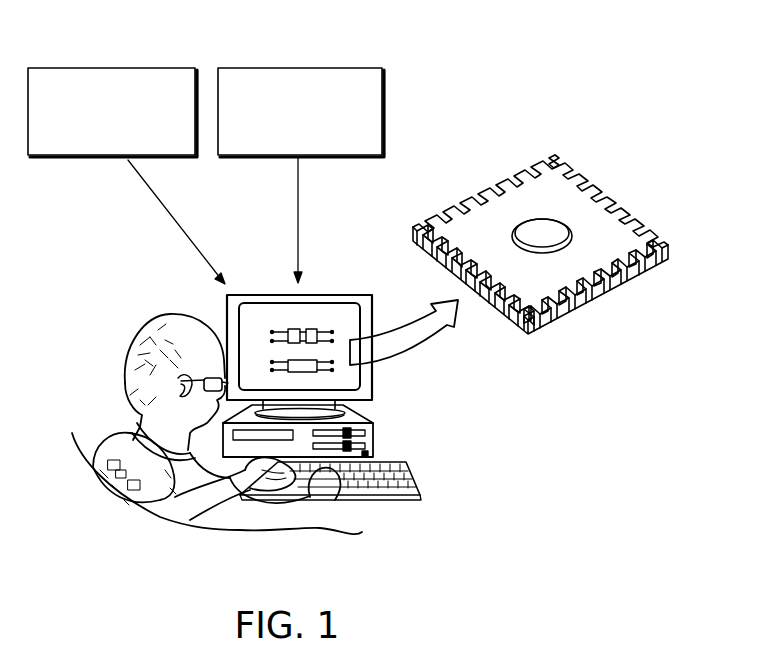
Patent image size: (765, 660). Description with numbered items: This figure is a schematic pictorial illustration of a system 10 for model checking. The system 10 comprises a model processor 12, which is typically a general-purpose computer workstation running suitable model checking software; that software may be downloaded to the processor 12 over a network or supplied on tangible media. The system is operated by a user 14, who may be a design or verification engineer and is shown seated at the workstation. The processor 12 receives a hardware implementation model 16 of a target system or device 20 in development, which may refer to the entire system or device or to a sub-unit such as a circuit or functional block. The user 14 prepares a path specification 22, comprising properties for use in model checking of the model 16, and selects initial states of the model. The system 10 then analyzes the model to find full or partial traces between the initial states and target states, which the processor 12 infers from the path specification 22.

The system 10 is at (492, 456).
The model processor 12 is at (376, 432).
The user 14 is at (125, 362).
The hardware implementation model 16 is at (301, 68).
The target system or device 20 is at (610, 293).
The path specification 22 is at (118, 68).